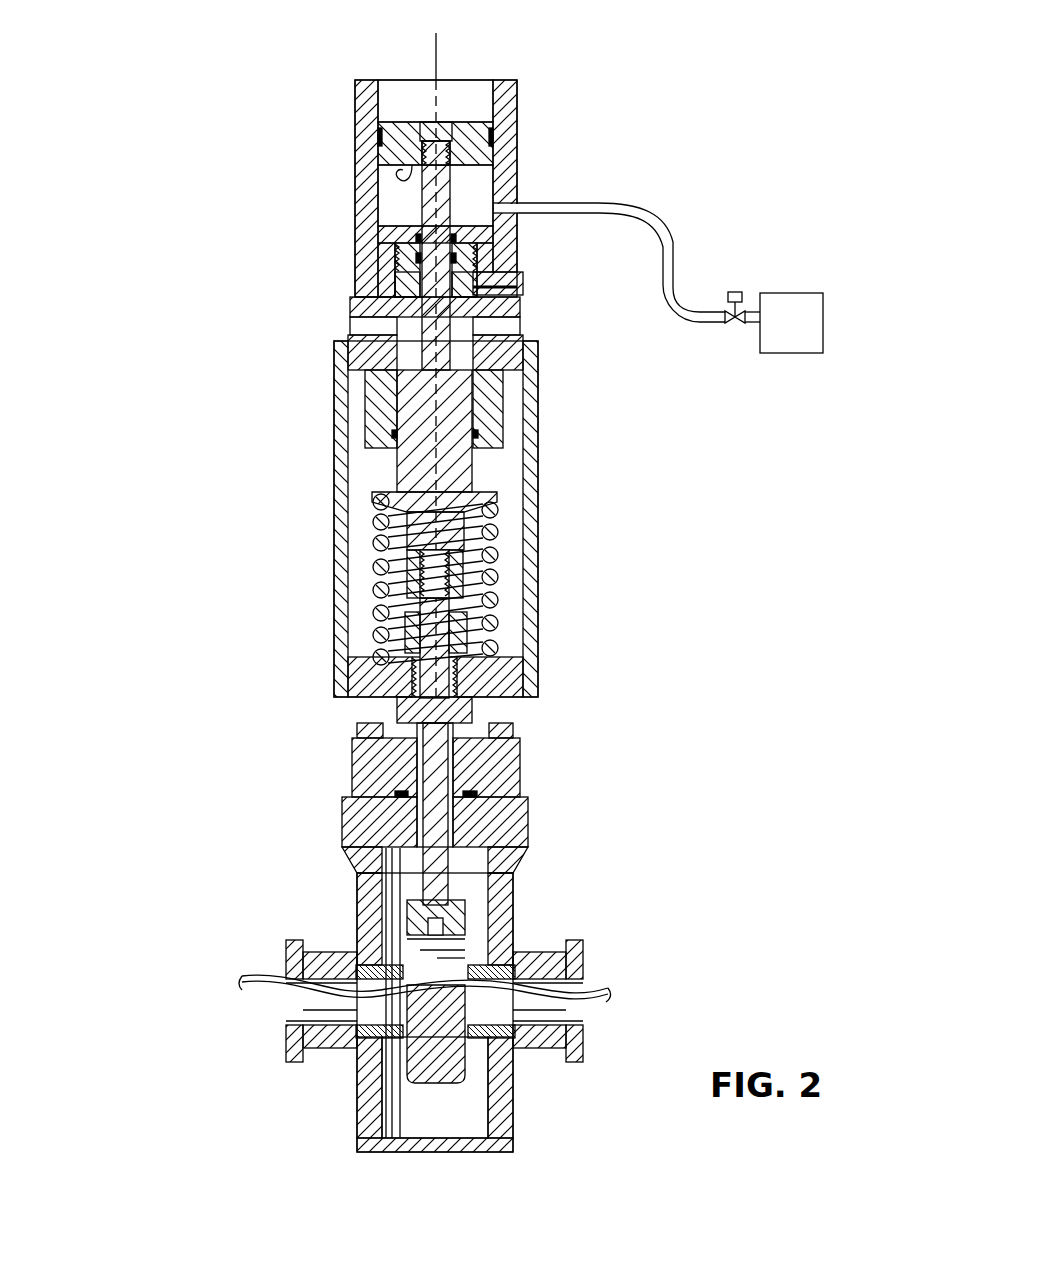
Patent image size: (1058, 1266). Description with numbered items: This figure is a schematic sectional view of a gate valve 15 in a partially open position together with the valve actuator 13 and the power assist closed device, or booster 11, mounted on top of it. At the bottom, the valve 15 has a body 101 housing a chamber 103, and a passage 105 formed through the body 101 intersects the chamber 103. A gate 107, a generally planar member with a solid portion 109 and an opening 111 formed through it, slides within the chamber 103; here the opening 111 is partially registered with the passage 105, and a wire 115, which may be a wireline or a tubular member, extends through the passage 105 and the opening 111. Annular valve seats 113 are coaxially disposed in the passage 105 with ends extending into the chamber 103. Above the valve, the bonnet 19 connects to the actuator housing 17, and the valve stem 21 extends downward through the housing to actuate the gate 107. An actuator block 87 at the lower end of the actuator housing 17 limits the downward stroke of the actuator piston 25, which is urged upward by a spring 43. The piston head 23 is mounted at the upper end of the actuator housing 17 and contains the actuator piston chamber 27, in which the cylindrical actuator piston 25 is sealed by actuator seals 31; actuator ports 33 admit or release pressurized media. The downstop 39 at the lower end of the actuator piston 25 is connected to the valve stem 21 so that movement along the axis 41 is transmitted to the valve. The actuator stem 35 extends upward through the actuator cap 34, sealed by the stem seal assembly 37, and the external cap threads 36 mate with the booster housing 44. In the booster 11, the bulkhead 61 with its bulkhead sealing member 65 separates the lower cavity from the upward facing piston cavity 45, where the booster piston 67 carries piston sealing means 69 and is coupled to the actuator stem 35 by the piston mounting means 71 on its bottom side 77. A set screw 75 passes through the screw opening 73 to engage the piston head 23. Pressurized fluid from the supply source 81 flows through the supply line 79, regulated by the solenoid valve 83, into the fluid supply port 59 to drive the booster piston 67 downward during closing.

The power assist closed device 11 is at (541, 116).
The valve actuator 13 is at (268, 408).
The valve 15 is at (282, 837).
The actuator housing 17 is at (538, 531).
The bonnet 19 is at (543, 767).
The valve stem 21 is at (422, 610).
The piston head 23 is at (500, 437).
The actuator piston 25 is at (410, 395).
The actuator piston chamber 27 is at (463, 392).
The actuator seals 31 is at (392, 433).
The actuator ports 33 is at (360, 326).
The actuator cap 34 is at (413, 274).
The actuator stem 35 is at (467, 177).
The external cap threads 36 is at (398, 267).
The stem seal assembly 37 is at (403, 253).
The downstop 39 is at (372, 493).
The axis 41 is at (437, 40).
The spring 43 is at (407, 560).
The booster housing 44 is at (357, 101).
The piston cavity 45 is at (392, 176).
The fluid supply port 59 is at (517, 208).
The bulkhead 61 is at (407, 230).
The bulkhead sealing member 65 is at (458, 238).
The booster piston 67 is at (421, 130).
The piston sealing means 69 is at (492, 157).
The piston mounting means 71 is at (438, 148).
The screw opening 73 is at (517, 285).
The set screw 75 is at (523, 278).
The bottom side 77 is at (405, 173).
The pressurized fluid supply line 79 is at (672, 268).
The pressurized fluid supply source 81 is at (760, 336).
The solenoid valve 83 is at (737, 292).
The actuator block 87 is at (460, 633).
The body 101 is at (360, 878).
The chamber 103 is at (418, 1120).
The passage 105 is at (308, 1023).
The gate 107 is at (490, 1086).
The solid portion 109 is at (403, 1063).
The opening 111 is at (455, 955).
The annular valve seats 113 is at (380, 968).
The wire 115 is at (264, 975).